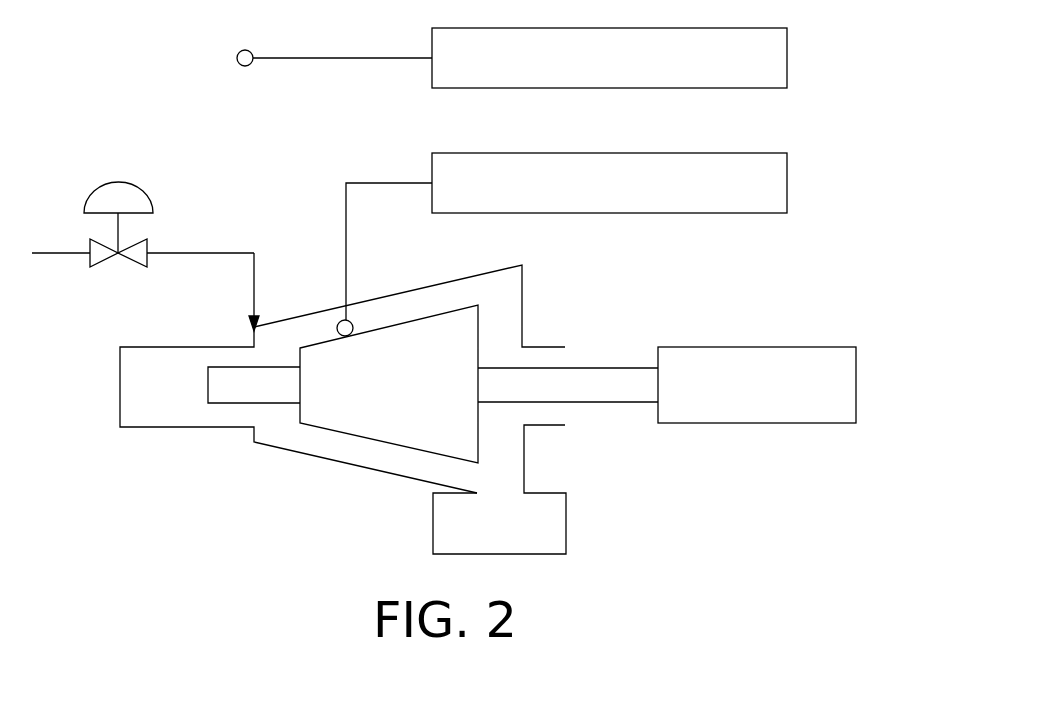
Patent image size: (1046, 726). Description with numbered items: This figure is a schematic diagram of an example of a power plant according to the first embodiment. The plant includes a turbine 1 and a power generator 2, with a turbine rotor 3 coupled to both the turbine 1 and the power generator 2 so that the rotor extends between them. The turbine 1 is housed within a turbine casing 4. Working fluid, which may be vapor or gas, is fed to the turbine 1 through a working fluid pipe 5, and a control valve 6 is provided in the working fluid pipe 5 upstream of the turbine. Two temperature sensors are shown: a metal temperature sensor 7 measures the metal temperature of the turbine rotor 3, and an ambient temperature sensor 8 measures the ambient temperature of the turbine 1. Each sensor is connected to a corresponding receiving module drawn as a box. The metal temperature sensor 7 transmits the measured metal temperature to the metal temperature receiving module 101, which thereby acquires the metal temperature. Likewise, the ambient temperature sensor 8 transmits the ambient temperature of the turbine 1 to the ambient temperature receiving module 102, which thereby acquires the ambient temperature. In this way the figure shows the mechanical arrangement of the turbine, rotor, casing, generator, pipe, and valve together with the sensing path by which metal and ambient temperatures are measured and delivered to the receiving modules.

The turbine 1 is at (393, 443).
The power generator 2 is at (744, 424).
The turbine rotor 3 is at (596, 367).
The turbine casing 4 is at (522, 295).
The working fluid pipe 5 is at (203, 252).
The control valve 6 is at (127, 193).
The metal temperature sensor 7 is at (338, 322).
The ambient temperature sensor 8 is at (237, 58).
The metal temperature receiving module 101 is at (787, 183).
The ambient temperature receiving module 102 is at (787, 55).